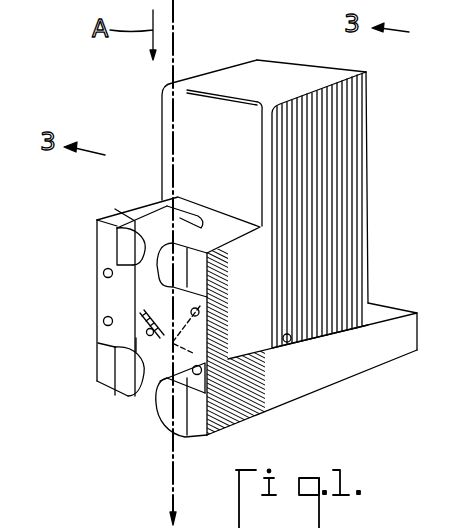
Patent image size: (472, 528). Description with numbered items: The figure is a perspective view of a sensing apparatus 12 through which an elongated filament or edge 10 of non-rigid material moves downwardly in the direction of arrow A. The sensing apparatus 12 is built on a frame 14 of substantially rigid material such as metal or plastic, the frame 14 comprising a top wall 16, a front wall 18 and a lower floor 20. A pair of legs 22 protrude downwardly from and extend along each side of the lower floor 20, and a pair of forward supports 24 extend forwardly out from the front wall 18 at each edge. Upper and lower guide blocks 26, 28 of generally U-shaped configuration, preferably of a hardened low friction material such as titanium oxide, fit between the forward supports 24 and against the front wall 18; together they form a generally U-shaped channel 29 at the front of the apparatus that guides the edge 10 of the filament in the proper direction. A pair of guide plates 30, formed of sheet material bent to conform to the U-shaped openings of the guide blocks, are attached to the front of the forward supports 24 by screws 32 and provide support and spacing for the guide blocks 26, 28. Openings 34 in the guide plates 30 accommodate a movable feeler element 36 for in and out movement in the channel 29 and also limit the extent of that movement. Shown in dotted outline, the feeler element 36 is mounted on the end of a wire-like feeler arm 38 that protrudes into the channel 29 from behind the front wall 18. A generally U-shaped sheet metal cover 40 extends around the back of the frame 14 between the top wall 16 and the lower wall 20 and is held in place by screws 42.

The filament or edge 10 is at (178, 25).
The sensing apparatus 12 is at (374, 113).
The frame 14 is at (300, 384).
The top wall 16 is at (258, 70).
The front wall 18 is at (193, 155).
The lower floor 20 is at (393, 313).
The legs 22 is at (106, 365).
The forward supports 24 is at (102, 229).
The upper guide block 26 is at (141, 228).
The lower guide block 28 is at (122, 378).
The U-shaped channel 29 is at (188, 221).
The guide plates 30 is at (106, 301).
The screws 32 is at (103, 271).
The openings 34 is at (137, 345).
The feeler element 36 is at (152, 322).
The feeler arm 38 is at (188, 331).
The sheet metal cover 40 is at (359, 191).
The screws 42 is at (291, 333).